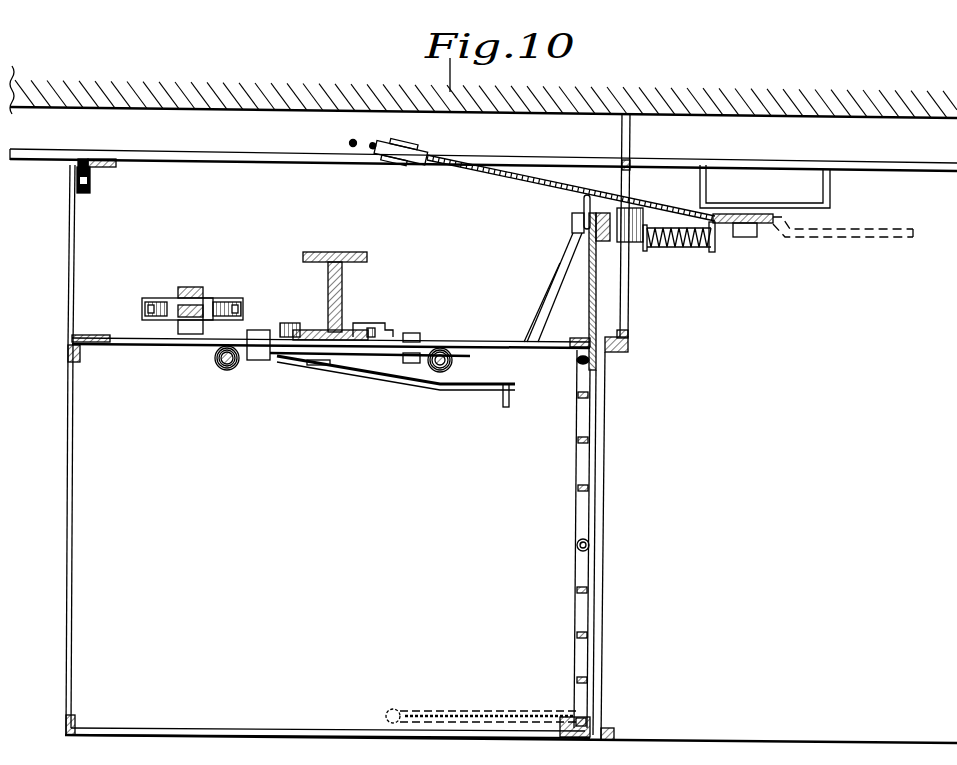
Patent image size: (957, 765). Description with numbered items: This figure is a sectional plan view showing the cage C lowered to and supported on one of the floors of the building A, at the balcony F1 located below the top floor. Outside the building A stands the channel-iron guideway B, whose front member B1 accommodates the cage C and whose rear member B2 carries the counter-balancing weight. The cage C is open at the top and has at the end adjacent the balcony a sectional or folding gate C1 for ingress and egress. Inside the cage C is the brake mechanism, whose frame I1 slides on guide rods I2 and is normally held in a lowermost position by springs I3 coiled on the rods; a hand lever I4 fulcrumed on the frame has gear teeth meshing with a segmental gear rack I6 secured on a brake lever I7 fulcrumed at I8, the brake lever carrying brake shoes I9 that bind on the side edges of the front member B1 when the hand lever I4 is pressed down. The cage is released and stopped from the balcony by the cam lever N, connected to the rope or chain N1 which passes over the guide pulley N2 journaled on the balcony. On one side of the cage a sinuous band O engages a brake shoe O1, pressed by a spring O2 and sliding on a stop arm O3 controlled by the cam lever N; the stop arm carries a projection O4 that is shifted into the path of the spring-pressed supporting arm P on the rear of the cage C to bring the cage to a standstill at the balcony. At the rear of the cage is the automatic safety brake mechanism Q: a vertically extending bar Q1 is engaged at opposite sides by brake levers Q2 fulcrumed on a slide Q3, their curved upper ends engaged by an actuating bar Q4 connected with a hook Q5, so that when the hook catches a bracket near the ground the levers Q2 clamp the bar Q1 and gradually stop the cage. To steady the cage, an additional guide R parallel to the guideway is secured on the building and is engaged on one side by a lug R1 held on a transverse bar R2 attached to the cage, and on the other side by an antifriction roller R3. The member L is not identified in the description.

The building A is at (483, 87).
The lug R1 is at (87, 160).
The additional guide R is at (106, 165).
The antifriction roller R3 is at (92, 185).
The transverse bar R2 is at (78, 247).
The pivot L is at (347, 142).
The guide pulley N2 is at (405, 162).
The rope or chain N1 is at (508, 175).
The cam lever N is at (822, 238).
The projection O4 is at (590, 206).
The spring-pressed supporting arm P is at (572, 219).
The sinuous band O is at (603, 242).
The brake shoe O1 is at (630, 243).
The spring O2 is at (678, 248).
The stop arm O3 is at (716, 216).
The rear member of guideway B2 is at (348, 254).
The guideway B is at (342, 290).
The front member of guideway B1 is at (323, 328).
The automatic safety brake mechanism Q is at (158, 300).
The vertically extending bar Q1 is at (185, 315).
The brake levers Q2 is at (145, 310).
The slide Q3 is at (146, 303).
The actuating bar Q4 is at (212, 306).
The hook Q5 is at (195, 290).
The frame I1 is at (405, 360).
The guide rods I2 is at (228, 370).
The springs I3 is at (214, 360).
The hand lever I4 is at (468, 385).
The segmental gear rack I6 is at (262, 360).
The brake lever I7 is at (372, 362).
The fulcrum I8 is at (418, 336).
The brake shoes I9 is at (290, 323).
The cage C is at (331, 541).
The sectional or folding gate C1 is at (577, 547).
The balcony F1 is at (689, 546).